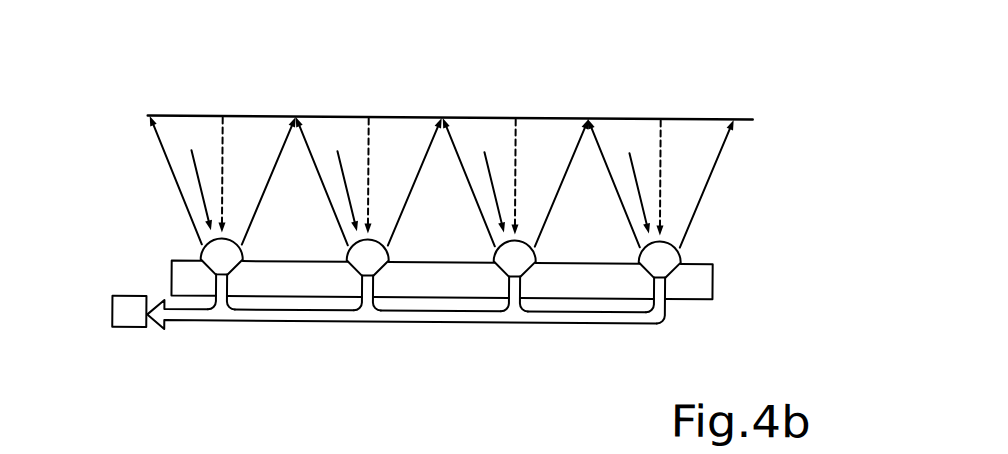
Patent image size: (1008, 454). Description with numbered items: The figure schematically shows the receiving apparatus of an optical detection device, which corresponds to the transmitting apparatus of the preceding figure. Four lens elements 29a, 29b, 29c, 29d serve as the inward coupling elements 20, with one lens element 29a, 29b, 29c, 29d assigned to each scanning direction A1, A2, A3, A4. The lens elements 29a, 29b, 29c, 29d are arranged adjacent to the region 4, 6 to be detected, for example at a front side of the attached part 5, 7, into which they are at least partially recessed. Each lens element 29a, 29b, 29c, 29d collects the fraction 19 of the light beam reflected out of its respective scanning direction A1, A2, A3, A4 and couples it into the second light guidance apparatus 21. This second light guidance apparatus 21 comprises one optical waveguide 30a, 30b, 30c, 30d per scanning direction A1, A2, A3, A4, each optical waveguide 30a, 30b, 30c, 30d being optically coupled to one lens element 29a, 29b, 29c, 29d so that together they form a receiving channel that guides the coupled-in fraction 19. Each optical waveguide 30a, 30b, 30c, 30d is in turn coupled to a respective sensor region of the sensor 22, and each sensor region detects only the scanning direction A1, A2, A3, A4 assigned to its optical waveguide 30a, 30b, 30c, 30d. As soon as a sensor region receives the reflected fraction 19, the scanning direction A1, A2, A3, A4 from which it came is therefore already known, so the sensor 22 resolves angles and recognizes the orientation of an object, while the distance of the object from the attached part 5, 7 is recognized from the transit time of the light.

The region 4 is at (463, 167).
The region 6 is at (778, 215).
The attached part 5 is at (481, 285).
The attached part 7 is at (713, 283).
The fraction of the light beam 19 is at (660, 145).
The inward coupling elements 20 is at (412, 176).
The second light guidance apparatus 21 is at (470, 345).
The sensor 22 is at (113, 313).
The lens element 29a is at (208, 252).
The lens element 29b is at (352, 252).
The lens element 29c is at (502, 252).
The lens element 29d is at (643, 252).
The optical waveguide 30a is at (226, 300).
The optical waveguide 30b is at (373, 303).
The optical waveguide 30c is at (521, 305).
The optical waveguide 30d is at (665, 303).
The scanning direction A1 is at (233, 100).
The scanning direction A2 is at (379, 100).
The scanning direction A3 is at (526, 100).
The scanning direction A4 is at (671, 100).